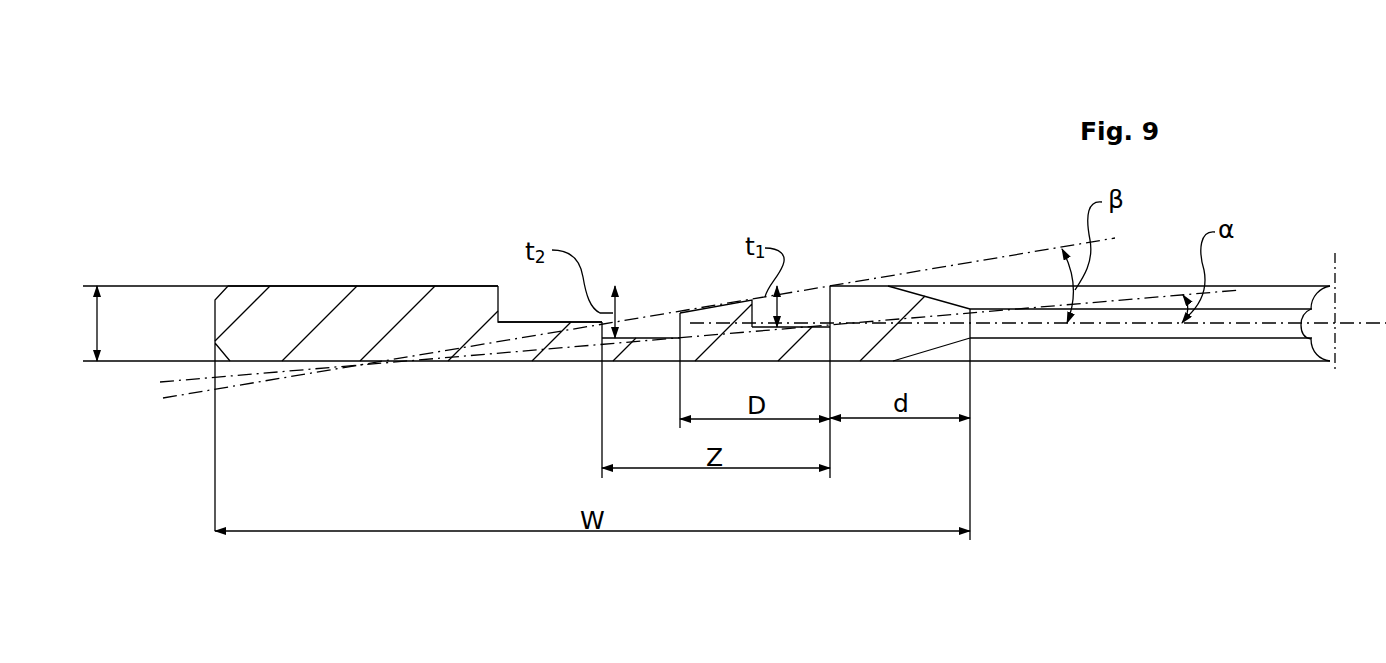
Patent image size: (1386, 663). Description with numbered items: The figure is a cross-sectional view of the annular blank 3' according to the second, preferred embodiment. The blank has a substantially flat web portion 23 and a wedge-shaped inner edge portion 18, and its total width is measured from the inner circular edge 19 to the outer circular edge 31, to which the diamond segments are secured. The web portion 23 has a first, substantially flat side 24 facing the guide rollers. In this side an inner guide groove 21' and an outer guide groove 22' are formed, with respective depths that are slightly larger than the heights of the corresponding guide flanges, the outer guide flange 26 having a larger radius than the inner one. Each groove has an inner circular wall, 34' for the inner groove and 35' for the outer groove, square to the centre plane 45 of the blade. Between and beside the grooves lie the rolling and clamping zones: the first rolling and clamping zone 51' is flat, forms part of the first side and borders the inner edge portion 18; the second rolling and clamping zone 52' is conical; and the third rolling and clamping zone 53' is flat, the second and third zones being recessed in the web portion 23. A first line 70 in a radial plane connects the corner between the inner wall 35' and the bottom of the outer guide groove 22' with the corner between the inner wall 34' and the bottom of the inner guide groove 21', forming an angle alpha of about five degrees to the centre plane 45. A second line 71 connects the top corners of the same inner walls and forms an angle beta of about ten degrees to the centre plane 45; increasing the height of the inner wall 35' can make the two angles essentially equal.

The annular blank 3' is at (703, 192).
The inner edge portion 18 is at (927, 330).
The inner circular edge 19 is at (973, 331).
The inner guide groove 21' is at (807, 251).
The outer guide groove 22' is at (603, 317).
The web portion 23 is at (357, 286).
The first side 24 is at (423, 286).
The outer guide flange 26 is at (520, 286).
The outer circular edge 31 is at (213, 332).
The inner wall of inner guide groove 34' is at (884, 326).
The inner wall of outer guide groove 35' is at (646, 311).
The centre plane 45 is at (1385, 335).
The first rolling and clamping zone 51' is at (939, 254).
The second rolling and clamping zone 52' is at (746, 247).
The third rolling and clamping zone 53' is at (534, 266).
The first line 70 is at (1100, 300).
The second line 71 is at (1013, 257).